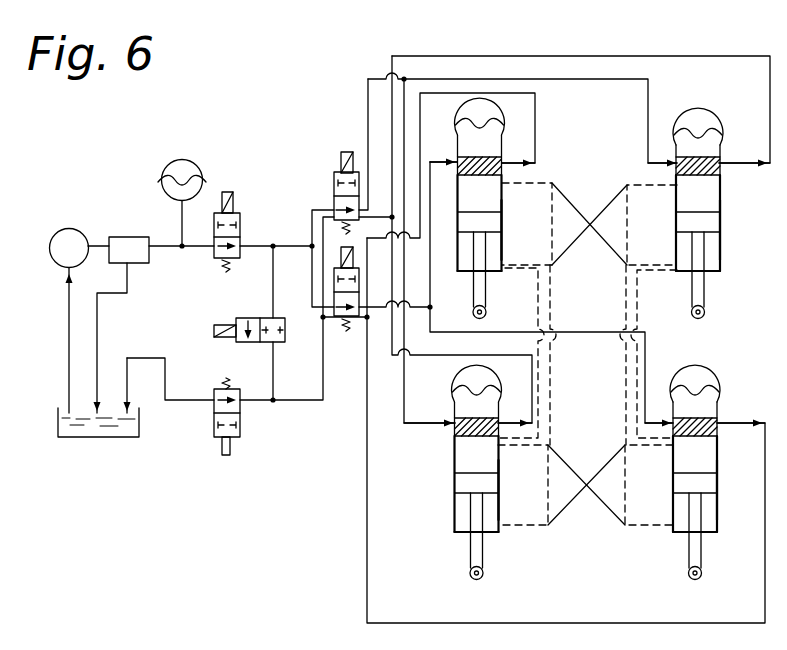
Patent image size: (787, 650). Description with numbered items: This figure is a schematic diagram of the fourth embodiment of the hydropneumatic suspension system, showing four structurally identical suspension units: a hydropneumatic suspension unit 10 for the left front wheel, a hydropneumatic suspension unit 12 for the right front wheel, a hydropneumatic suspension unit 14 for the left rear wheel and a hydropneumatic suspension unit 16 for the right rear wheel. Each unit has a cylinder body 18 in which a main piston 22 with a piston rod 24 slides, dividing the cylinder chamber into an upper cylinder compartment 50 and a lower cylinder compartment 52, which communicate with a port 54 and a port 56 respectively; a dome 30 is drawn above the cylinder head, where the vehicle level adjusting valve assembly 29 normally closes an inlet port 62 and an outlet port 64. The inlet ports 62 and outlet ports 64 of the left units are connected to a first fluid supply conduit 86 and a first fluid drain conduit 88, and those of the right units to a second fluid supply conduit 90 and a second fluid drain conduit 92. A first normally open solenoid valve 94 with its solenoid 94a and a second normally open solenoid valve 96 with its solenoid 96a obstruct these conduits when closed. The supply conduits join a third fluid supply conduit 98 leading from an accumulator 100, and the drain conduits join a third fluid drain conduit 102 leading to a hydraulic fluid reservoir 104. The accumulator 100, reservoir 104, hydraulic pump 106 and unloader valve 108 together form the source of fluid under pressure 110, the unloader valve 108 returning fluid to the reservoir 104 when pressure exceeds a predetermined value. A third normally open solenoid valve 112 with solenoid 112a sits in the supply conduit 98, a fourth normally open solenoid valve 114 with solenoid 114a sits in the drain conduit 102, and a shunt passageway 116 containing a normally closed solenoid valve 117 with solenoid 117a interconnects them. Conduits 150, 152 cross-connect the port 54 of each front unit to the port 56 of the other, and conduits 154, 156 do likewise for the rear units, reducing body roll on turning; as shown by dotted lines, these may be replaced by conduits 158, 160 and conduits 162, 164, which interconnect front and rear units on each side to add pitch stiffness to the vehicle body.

The hydropneumatic suspension unit 10 is at (453, 236).
The hydropneumatic suspension unit 12 is at (672, 233).
The hydropneumatic suspension unit 14 is at (451, 485).
The hydropneumatic suspension unit 16 is at (668, 491).
The cylinder body 18 is at (503, 247).
The main piston 22 is at (503, 222).
The piston rod 24 is at (487, 309).
The vehicle level adjusting valve assembly 29 is at (503, 157).
The hydropneumatic suspension unit gas chamber dome 30 is at (460, 111).
The upper cylinder compartment 50 is at (492, 201).
The lower cylinder compartment 52 is at (462, 264).
The port 54 is at (506, 186).
The port 56 is at (505, 273).
The inlet port 62 is at (451, 166).
The outlet port 64 is at (523, 165).
The first fluid supply conduit 86 is at (311, 272).
The first fluid drain conduit 88 is at (311, 244).
The second fluid supply conduit 90 is at (356, 322).
The second fluid drain conduit 92 is at (323, 222).
The first normally open solenoid valve 94 is at (341, 331).
The solenoid 94a is at (353, 250).
The second normally open solenoid valve 96 is at (335, 186).
The solenoid 96a is at (347, 152).
The third fluid supply conduit 98 is at (273, 245).
The accumulator 100 is at (183, 159).
The third fluid drain conduit 102 is at (325, 396).
The hydraulic fluid reservoir 104 is at (123, 438).
The hydraulic pump 106 is at (76, 229).
The unloader valve 108 is at (129, 237).
The source of fluid under pressure 110 is at (124, 150).
The third normally open solenoid valve 112 is at (214, 252).
The solenoid 112a is at (237, 182).
The fourth normally open solenoid valve 114 is at (214, 430).
The solenoid 114a is at (231, 449).
The shunt passageway 116 is at (270, 290).
The normally closed solenoid valve 117 is at (258, 343).
The solenoid 117a is at (216, 325).
The conduit 150 is at (576, 207).
The conduit 152 is at (571, 238).
The conduit 154 is at (567, 456).
The conduit 156 is at (571, 509).
The conduit 158 is at (552, 300).
The conduit 160 is at (541, 317).
The conduit 162 is at (633, 291).
The conduit 164 is at (623, 368).